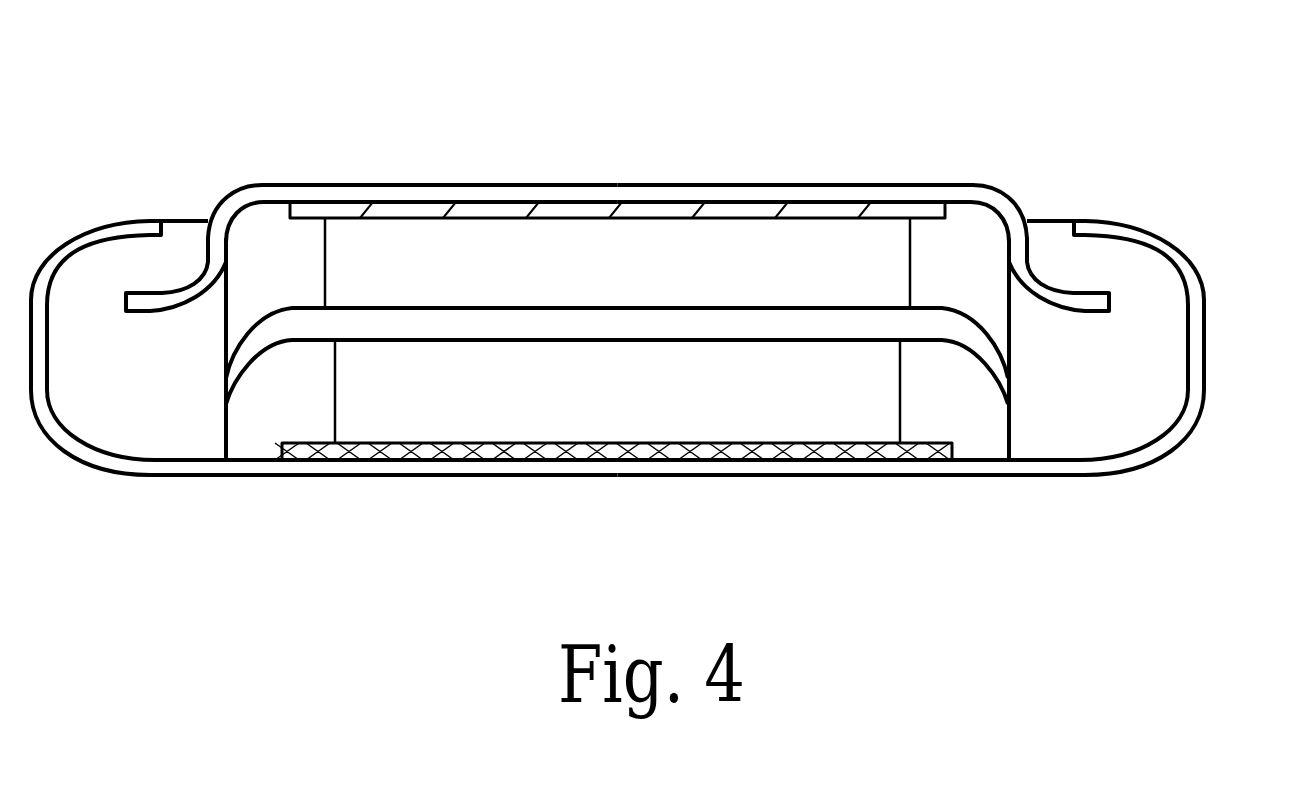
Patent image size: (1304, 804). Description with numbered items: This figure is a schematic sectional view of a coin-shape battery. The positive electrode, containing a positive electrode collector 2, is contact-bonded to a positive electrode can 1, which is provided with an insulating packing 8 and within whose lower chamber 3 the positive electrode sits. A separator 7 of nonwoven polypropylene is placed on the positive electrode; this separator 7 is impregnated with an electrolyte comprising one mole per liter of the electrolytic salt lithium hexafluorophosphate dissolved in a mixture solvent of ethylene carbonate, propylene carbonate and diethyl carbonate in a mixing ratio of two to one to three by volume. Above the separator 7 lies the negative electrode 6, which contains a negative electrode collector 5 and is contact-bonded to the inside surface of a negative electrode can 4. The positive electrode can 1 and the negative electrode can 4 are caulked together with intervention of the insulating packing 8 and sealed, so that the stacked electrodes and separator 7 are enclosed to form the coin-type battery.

The positive electrode can 1 is at (362, 467).
The positive electrode collector 2 is at (562, 458).
The lower chamber 3 is at (765, 402).
The negative electrode can 4 is at (370, 193).
The negative electrode collector 5 is at (543, 210).
The negative electrode 6 is at (752, 273).
The separator 7 is at (960, 330).
The insulating packing 8 is at (1148, 360).